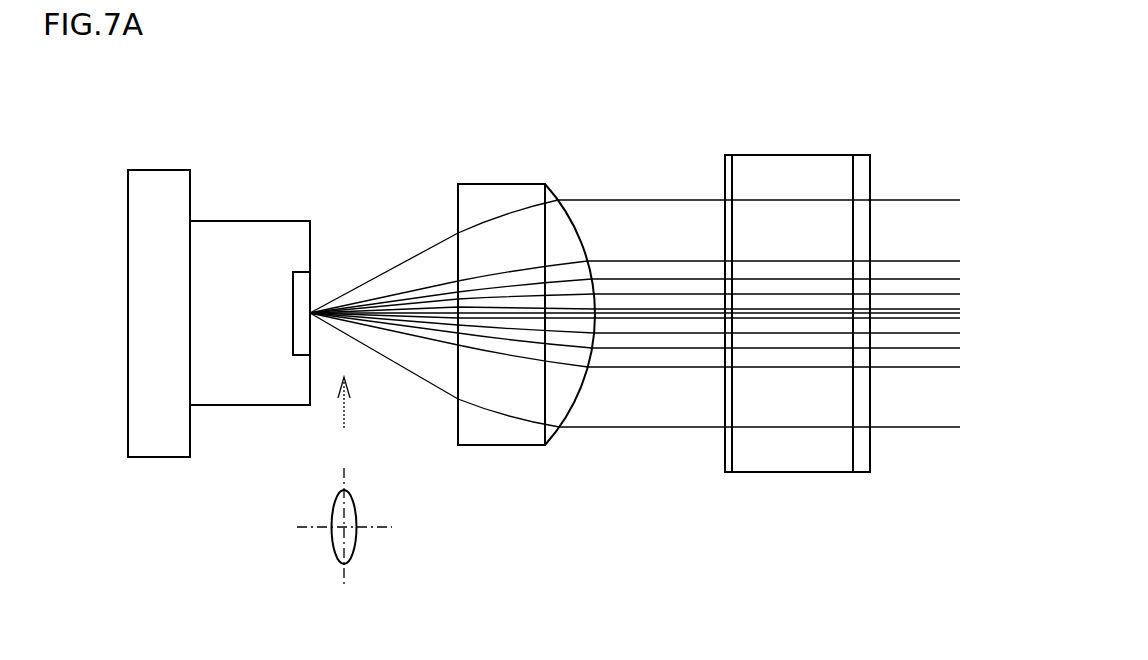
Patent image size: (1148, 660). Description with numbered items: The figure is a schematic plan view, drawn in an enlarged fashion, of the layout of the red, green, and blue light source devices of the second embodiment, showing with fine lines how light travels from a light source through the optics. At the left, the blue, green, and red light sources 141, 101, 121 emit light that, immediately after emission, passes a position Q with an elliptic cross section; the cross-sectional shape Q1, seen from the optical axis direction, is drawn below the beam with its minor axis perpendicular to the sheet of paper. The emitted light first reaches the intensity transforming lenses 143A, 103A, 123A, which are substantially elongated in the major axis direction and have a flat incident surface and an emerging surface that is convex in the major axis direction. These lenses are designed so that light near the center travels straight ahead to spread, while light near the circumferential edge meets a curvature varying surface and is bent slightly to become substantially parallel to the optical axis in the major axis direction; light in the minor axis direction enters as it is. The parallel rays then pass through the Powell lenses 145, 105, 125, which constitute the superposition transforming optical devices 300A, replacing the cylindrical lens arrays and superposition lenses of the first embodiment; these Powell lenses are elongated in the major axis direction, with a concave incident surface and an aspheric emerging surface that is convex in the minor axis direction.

The blue light source 141 is at (187, 273).
The green light source 101 is at (187, 273).
The red light source 121 is at (158, 192).
The intensity transforming lens 143A is at (471, 253).
The intensity transforming lens 103A is at (471, 253).
The intensity transforming lens 123A is at (488, 198).
The Powell lens 145 is at (809, 259).
The Powell lens 105 is at (809, 259).
The Powell lens 125 is at (809, 259).
The superposition transforming optical device 300A is at (792, 193).
The position Q is at (343, 420).
The cross-sectional shape of emitted light Q1 is at (362, 543).